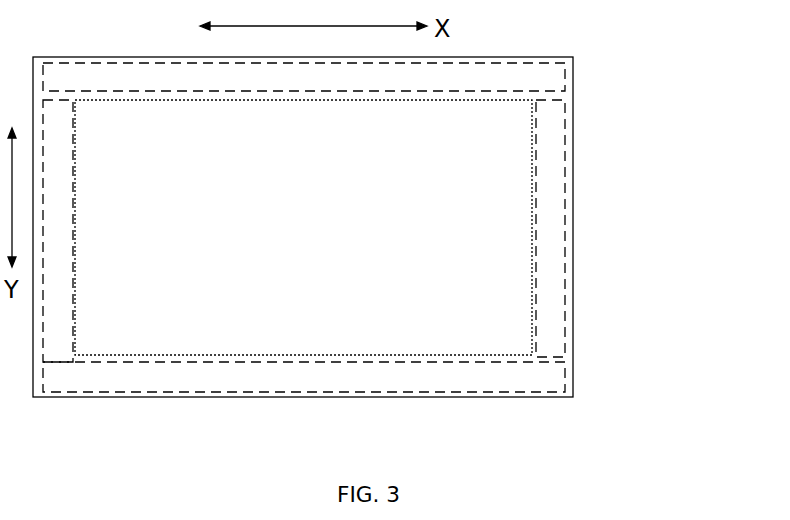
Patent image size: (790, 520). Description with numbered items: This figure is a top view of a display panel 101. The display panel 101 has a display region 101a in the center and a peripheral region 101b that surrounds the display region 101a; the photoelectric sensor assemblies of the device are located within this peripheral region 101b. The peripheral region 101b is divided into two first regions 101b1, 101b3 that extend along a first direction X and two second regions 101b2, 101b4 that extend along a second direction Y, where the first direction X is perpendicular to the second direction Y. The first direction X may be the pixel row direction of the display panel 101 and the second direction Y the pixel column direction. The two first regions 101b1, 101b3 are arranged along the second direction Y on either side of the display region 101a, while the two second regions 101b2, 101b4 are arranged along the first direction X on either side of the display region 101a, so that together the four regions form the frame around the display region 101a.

The display panel 101 is at (72, 46).
The display region 101a is at (463, 186).
The peripheral region 101b is at (397, 256).
The first region 101b1 is at (525, 78).
The second region 101b2 is at (555, 141).
The first region 101b3 is at (527, 380).
The second region 101b4 is at (58, 318).